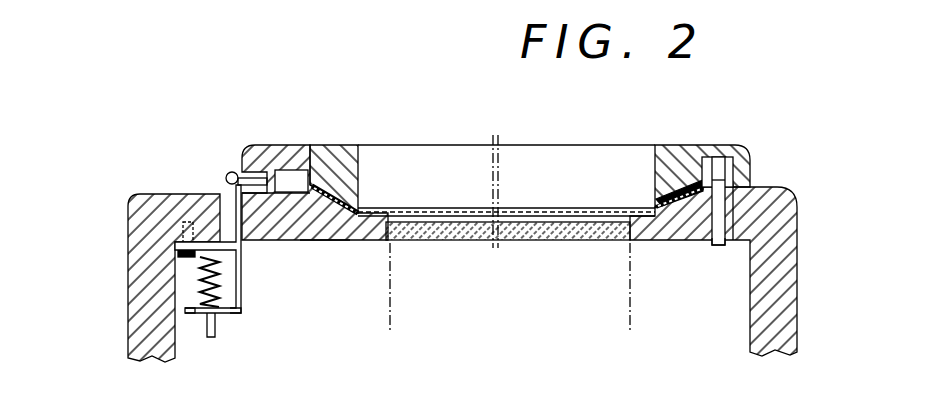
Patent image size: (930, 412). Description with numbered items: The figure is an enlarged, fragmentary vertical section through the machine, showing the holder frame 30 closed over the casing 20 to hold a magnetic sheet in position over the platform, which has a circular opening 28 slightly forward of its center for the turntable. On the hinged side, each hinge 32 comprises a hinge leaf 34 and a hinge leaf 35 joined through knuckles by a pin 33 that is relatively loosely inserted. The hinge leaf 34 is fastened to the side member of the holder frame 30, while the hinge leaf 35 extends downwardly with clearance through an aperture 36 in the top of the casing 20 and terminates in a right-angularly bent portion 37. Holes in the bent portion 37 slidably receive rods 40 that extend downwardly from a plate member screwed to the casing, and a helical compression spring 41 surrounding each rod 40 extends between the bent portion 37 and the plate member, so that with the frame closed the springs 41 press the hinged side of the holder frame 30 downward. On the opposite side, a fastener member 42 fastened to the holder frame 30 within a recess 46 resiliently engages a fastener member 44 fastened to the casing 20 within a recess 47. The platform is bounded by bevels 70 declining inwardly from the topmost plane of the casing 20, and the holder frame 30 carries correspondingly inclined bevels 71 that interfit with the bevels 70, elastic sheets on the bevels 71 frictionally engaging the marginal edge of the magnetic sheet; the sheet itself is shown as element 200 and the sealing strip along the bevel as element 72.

The casing 20 is at (142, 213).
The circular opening 28 is at (395, 242).
The holder frame 30 is at (327, 144).
The hinge 32 is at (237, 263).
The pin 33 is at (227, 173).
The hinge leaf 34 is at (250, 181).
The hinge leaf 35 is at (240, 300).
The aperture 36 is at (220, 207).
The bent portion 37 is at (188, 312).
The rod 40 is at (212, 330).
The helical compression spring 41 is at (203, 288).
The fastener member 42 is at (720, 168).
The fastener member 44 is at (717, 245).
The recess 46 is at (708, 157).
The recess 47 is at (733, 213).
The bevel 70 is at (325, 242).
The bevel 71 is at (360, 172).
The wedge 72 is at (365, 183).
The substrate 200 is at (563, 208).